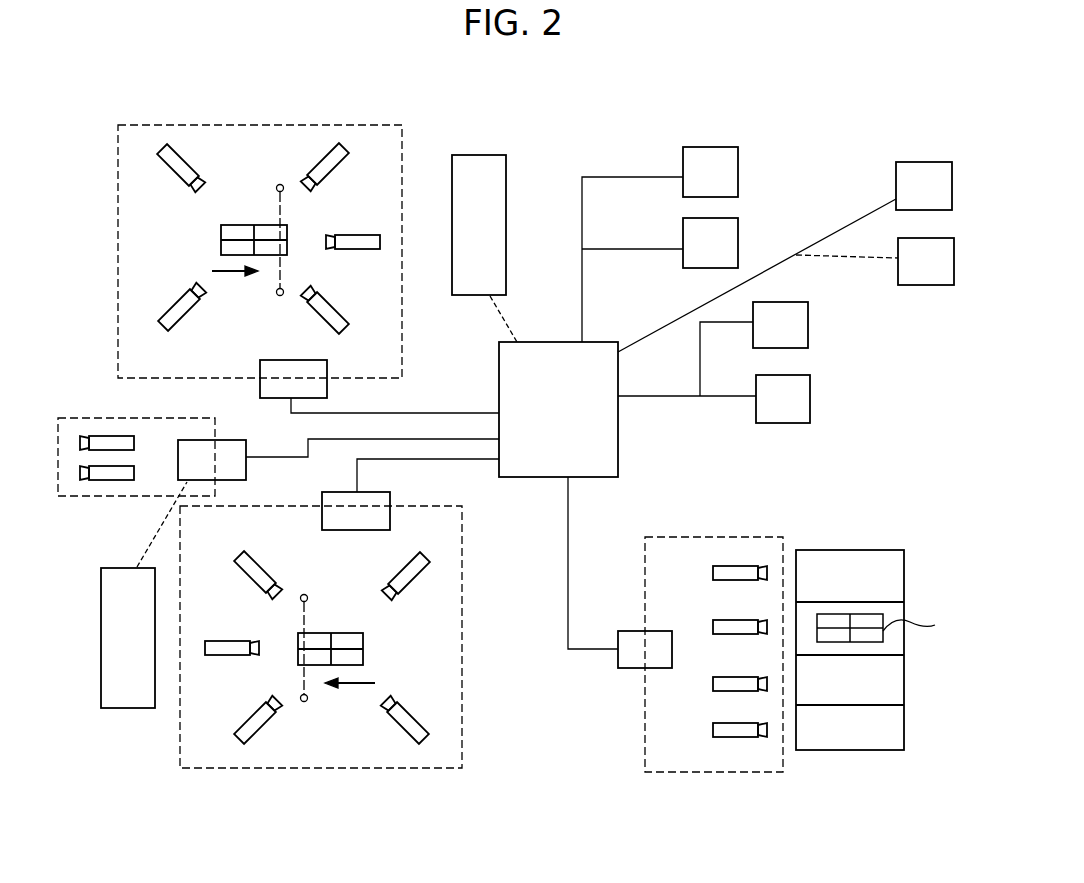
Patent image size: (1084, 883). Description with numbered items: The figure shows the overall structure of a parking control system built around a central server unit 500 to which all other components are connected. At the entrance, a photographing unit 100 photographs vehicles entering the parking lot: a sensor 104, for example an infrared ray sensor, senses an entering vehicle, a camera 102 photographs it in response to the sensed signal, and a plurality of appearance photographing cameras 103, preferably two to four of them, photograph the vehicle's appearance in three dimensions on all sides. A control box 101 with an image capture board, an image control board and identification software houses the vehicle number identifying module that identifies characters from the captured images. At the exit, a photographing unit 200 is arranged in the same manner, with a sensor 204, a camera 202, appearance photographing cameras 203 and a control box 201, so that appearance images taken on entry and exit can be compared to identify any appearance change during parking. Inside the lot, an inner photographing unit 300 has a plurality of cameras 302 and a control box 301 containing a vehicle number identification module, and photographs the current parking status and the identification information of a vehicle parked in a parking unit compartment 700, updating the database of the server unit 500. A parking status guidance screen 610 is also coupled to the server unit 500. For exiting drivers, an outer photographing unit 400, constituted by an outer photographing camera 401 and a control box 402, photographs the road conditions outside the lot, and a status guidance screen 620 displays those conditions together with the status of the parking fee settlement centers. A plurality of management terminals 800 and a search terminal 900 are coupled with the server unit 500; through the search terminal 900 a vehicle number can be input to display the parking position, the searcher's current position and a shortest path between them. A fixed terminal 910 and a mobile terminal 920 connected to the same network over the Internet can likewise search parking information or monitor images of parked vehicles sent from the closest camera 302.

The photographing unit 100 is at (402, 137).
The control box 101 is at (293, 379).
The camera 102 is at (363, 251).
The appearance photographing cameras 103 is at (172, 172).
The sensor 104 is at (280, 297).
The photographing unit 200 is at (462, 640).
The control box 201 is at (356, 511).
The camera 202 is at (222, 640).
The appearance photographing cameras 203 is at (410, 585).
The sensor 204 is at (305, 592).
The inner photographing unit 300 is at (717, 537).
The control box 301 is at (645, 649).
The cameras 302 is at (728, 626).
The outer photographing unit 400 is at (137, 497).
The outer photographing camera 401 is at (212, 460).
The control box 402 is at (96, 441).
The server unit 500 is at (558, 409).
The parking status guidance screen 610 is at (479, 225).
The status guidance screen 620 is at (128, 638).
The parking unit compartment 700 is at (865, 575).
The management terminals 800 is at (660, 244).
The search terminal 900 is at (714, 362).
The fixed terminal 910 is at (785, 257).
The mobile terminal 920 is at (875, 261).